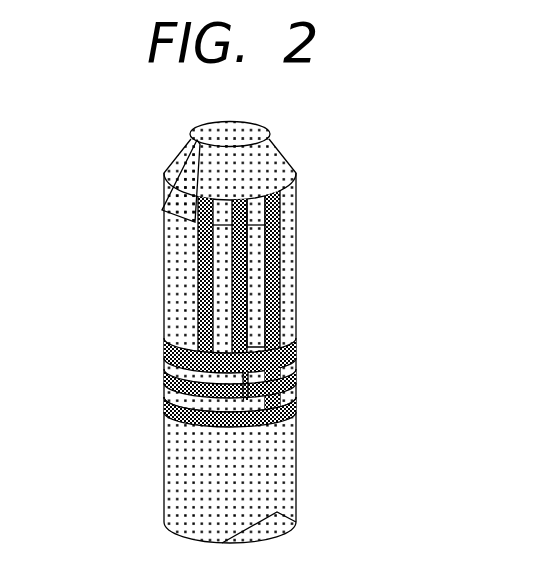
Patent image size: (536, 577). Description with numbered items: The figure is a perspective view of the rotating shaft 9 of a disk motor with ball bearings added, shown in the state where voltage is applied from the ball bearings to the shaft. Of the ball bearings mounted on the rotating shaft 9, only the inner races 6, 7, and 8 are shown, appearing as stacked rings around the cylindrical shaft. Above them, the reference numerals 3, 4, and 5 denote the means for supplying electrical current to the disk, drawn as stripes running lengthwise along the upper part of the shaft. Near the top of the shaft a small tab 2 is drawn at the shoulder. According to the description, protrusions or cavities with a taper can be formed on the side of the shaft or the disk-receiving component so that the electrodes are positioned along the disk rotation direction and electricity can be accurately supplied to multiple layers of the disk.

The tab flap 2 is at (167, 205).
The means for supplying electrical current 3 is at (248, 224).
The means for supplying electrical current 4 is at (250, 268).
The means for supplying electrical current 5 is at (268, 308).
The inner race 6 is at (172, 348).
The inner race 7 is at (175, 386).
The inner race 8 is at (288, 413).
The rotating shaft 9 is at (172, 482).